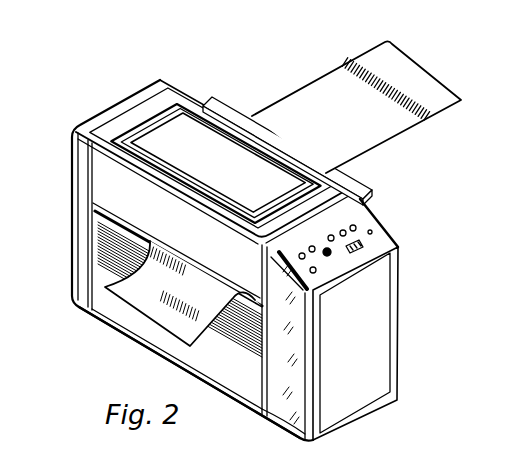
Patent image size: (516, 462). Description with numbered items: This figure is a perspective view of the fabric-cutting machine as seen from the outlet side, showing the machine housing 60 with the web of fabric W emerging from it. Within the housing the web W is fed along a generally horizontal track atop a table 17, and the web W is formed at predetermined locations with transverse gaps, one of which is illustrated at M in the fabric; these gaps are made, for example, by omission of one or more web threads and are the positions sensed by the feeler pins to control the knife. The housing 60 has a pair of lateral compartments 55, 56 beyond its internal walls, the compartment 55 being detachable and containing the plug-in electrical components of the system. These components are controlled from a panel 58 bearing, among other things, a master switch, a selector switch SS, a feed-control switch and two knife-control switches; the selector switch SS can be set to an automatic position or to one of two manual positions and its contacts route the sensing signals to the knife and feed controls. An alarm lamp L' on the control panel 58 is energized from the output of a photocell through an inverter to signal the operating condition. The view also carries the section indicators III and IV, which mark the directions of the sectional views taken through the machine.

The transverse gap M is at (342, 66).
The table 17 is at (360, 193).
The alarm lamp L' is at (390, 216).
The selector switch SS is at (392, 230).
The panel 58 is at (365, 248).
The lateral compartment 55 is at (342, 408).
The lateral compartment 56 is at (80, 304).
The machine housing 60 is at (125, 343).
The web of fabric W is at (173, 331).
The section line III is at (406, 323).
The section line IV is at (82, 102).